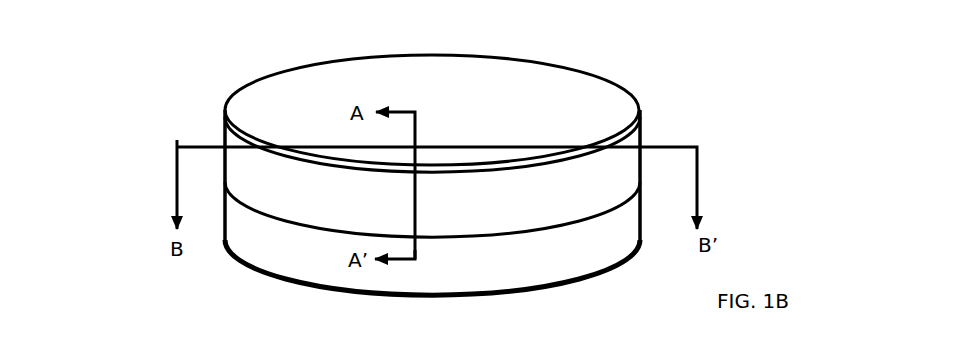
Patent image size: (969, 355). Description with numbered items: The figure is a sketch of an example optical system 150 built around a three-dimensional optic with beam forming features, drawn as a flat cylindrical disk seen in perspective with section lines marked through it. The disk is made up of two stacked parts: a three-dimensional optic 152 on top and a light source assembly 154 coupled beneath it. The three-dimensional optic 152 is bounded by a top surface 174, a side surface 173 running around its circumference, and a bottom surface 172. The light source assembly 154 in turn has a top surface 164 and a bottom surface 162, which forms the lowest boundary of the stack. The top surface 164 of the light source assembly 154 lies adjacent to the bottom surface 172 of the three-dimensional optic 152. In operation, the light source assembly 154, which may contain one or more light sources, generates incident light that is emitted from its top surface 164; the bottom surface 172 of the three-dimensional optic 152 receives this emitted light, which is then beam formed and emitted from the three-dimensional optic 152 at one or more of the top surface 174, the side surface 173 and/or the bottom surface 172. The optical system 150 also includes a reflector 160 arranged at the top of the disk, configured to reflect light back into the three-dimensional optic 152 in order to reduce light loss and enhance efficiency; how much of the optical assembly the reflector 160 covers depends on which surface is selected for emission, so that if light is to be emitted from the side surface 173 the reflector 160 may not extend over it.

The optical system 150 is at (73, 76).
The 3-D optic 152 is at (213, 166).
The light source assembly 154 is at (657, 228).
The reflector 160 is at (654, 130).
The bottom surface 162 is at (444, 287).
The top surface 164 is at (307, 232).
The bottom surface 172 is at (432, 184).
The side surface 173 is at (631, 155).
The top surface 174 is at (340, 174).